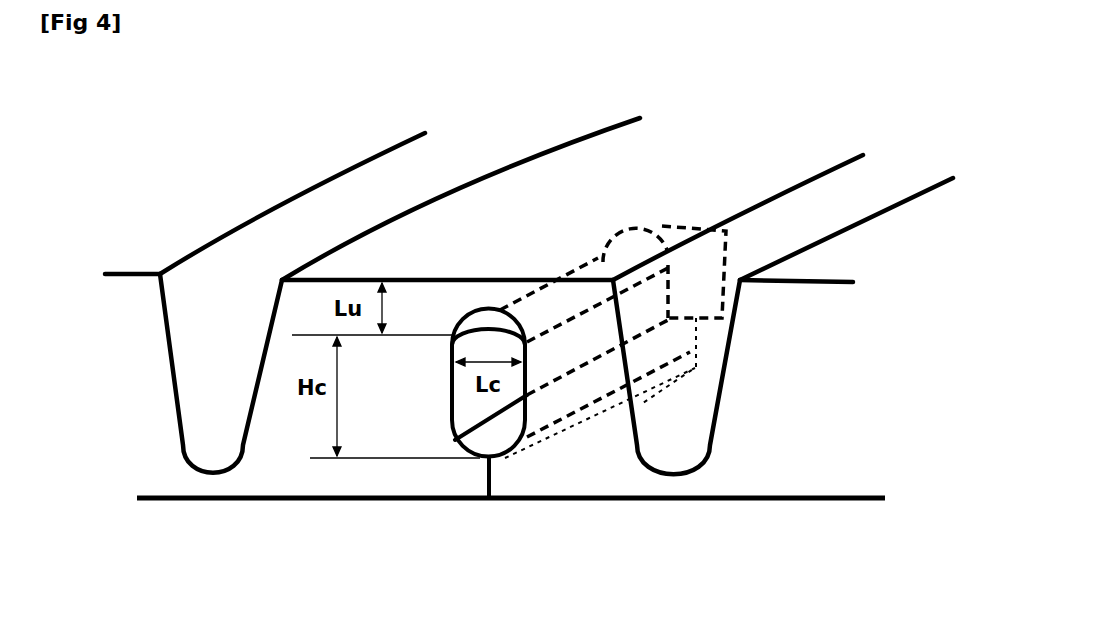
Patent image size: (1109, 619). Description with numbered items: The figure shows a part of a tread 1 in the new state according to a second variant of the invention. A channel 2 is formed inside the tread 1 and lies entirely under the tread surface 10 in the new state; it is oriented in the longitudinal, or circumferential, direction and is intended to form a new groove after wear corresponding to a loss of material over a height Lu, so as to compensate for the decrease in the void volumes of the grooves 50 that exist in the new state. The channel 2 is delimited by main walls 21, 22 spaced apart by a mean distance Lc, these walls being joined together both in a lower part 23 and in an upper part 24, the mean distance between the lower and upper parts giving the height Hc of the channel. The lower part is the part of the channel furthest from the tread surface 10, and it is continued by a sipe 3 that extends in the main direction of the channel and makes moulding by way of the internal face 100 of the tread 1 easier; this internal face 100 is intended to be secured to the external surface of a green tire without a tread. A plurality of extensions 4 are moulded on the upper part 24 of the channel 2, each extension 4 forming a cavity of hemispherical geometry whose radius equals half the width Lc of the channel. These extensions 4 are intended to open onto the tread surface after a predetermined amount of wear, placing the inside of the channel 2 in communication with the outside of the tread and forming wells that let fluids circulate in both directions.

The tread 1 is at (180, 234).
The grooves 50 is at (263, 240).
The upper part 24 is at (593, 270).
The tread surface 10 is at (593, 193).
The extensions 4 is at (470, 306).
The main wall 21 is at (452, 378).
The main wall 22 is at (527, 388).
The lower part 23 is at (472, 443).
The channel 2 is at (455, 432).
The sipe 3 is at (493, 475).
The internal face 100 is at (787, 500).